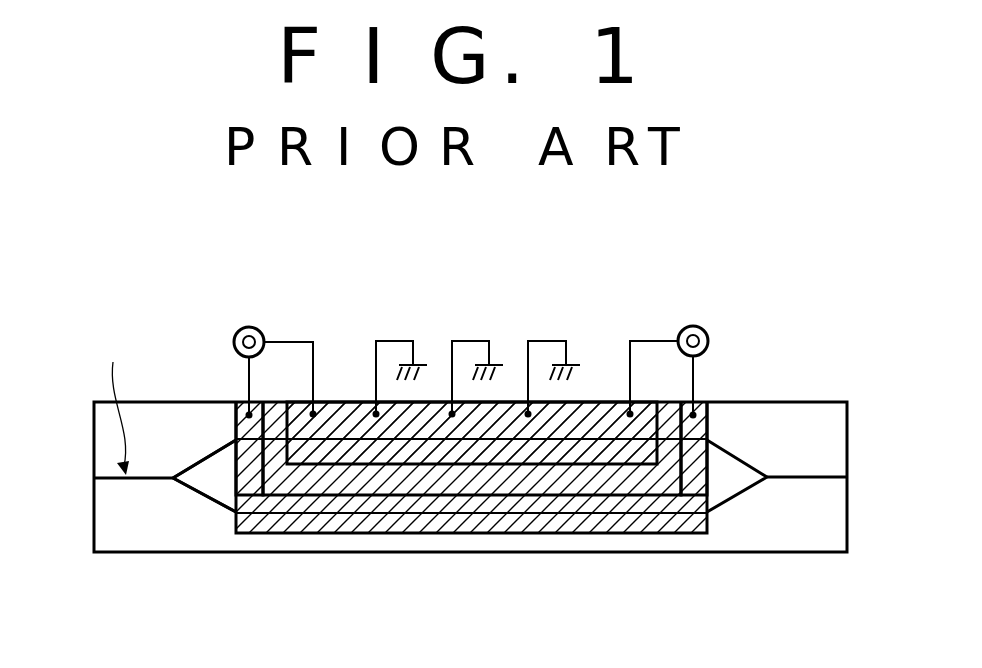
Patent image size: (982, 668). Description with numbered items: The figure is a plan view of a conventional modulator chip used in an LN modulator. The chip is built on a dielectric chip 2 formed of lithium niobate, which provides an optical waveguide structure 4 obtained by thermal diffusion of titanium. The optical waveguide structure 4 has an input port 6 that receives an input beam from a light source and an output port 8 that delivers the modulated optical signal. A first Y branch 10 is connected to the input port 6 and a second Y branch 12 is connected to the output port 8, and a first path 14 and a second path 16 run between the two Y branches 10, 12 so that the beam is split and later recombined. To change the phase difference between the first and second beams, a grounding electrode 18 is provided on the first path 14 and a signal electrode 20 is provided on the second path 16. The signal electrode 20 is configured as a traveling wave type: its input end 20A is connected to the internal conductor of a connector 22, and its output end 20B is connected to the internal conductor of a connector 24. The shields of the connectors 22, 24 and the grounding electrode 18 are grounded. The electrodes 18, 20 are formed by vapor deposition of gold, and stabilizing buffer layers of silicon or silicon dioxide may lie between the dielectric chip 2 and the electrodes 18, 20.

The dielectric chip 2 is at (818, 402).
The optical waveguide structure 4 is at (117, 406).
The input port 6 is at (93, 478).
The output port 8 is at (852, 478).
The first Y branch 10 is at (173, 478).
The second Y branch 12 is at (767, 478).
The first path 14 is at (207, 453).
The second path 16 is at (198, 498).
The grounding electrode 18 is at (504, 412).
The signal electrode 20 is at (465, 523).
The input end 20A is at (237, 413).
The output end 20B is at (703, 402).
The connector 22 is at (254, 327).
The connector 24 is at (683, 326).